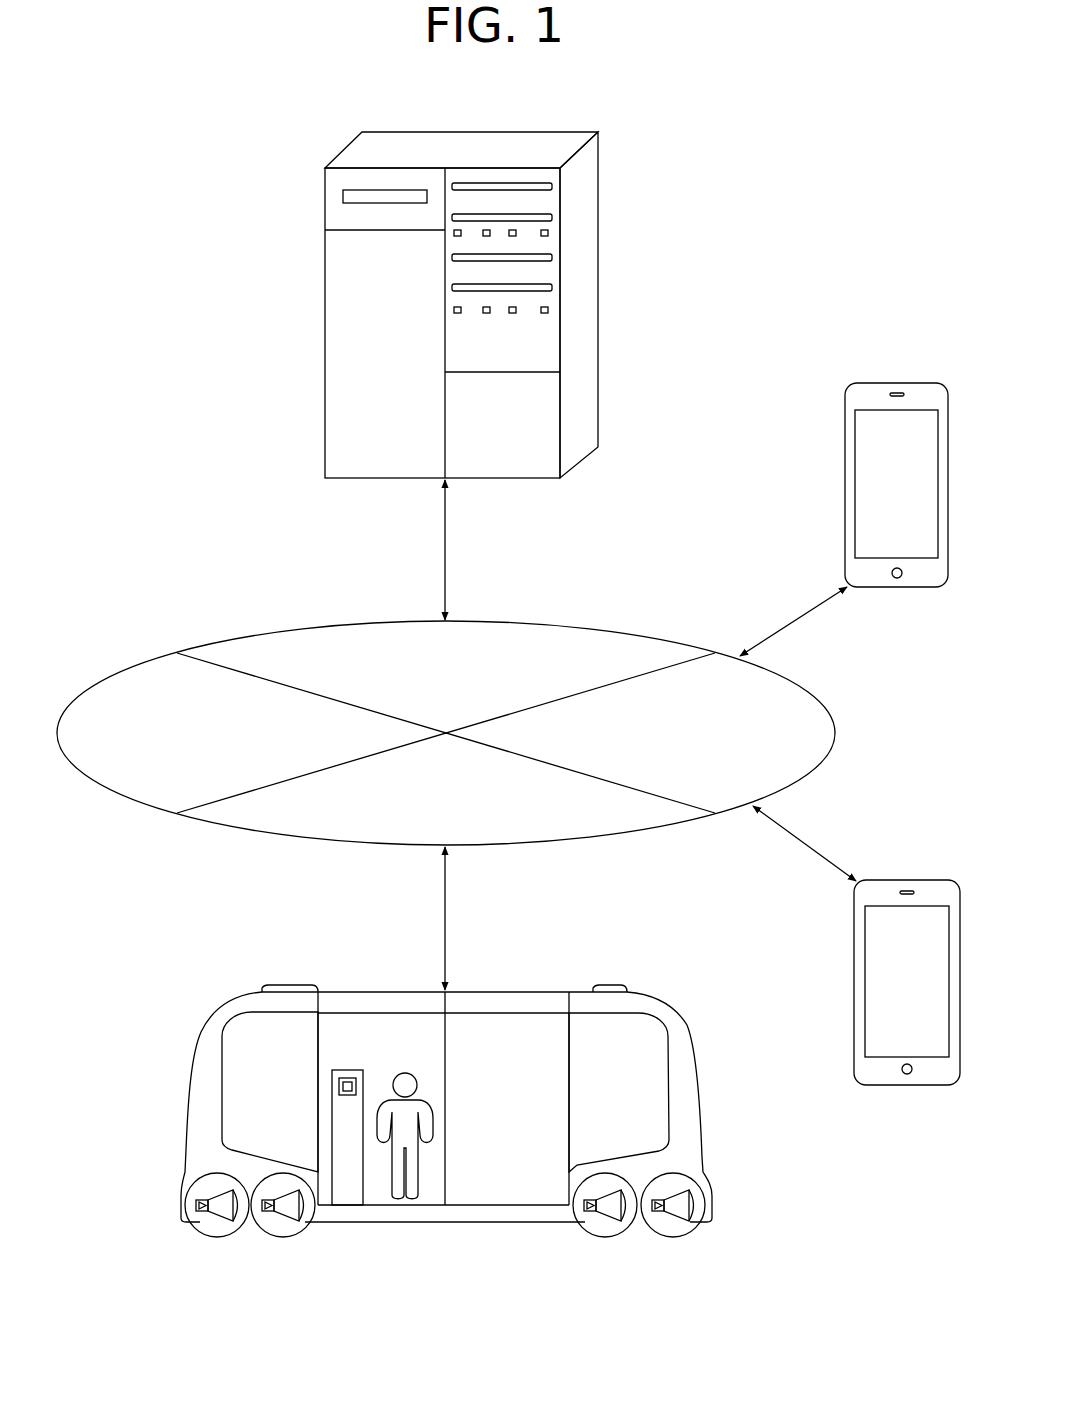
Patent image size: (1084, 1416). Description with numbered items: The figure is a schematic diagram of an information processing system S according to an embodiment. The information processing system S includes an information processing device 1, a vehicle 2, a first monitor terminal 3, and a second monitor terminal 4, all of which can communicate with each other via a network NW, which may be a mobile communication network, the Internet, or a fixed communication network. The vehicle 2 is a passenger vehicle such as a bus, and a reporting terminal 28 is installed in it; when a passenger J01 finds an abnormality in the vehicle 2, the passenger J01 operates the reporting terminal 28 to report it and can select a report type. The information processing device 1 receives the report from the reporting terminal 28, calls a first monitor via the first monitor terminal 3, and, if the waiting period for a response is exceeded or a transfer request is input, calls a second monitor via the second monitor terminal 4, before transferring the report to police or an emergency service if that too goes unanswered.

The information processing device 1 is at (452, 145).
The vehicle 2 is at (446, 1140).
The first monitor terminal 3 is at (899, 383).
The second monitor terminal 4 is at (905, 880).
The reporting terminal 28 is at (343, 1070).
The passenger J01 is at (416, 1079).
The network NW is at (105, 680).
The information processing system S is at (757, 243).